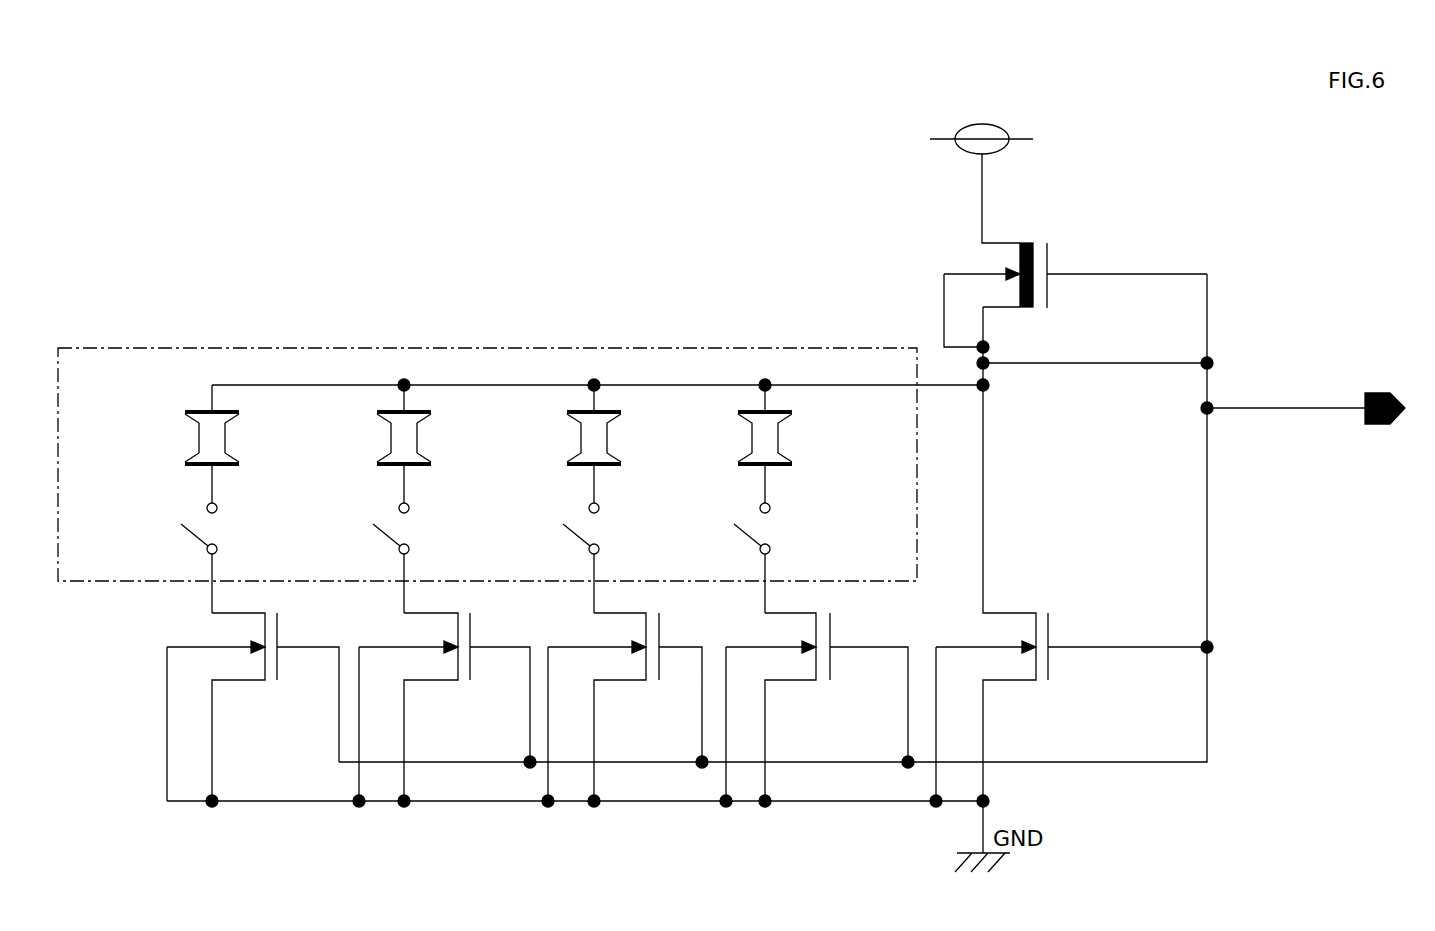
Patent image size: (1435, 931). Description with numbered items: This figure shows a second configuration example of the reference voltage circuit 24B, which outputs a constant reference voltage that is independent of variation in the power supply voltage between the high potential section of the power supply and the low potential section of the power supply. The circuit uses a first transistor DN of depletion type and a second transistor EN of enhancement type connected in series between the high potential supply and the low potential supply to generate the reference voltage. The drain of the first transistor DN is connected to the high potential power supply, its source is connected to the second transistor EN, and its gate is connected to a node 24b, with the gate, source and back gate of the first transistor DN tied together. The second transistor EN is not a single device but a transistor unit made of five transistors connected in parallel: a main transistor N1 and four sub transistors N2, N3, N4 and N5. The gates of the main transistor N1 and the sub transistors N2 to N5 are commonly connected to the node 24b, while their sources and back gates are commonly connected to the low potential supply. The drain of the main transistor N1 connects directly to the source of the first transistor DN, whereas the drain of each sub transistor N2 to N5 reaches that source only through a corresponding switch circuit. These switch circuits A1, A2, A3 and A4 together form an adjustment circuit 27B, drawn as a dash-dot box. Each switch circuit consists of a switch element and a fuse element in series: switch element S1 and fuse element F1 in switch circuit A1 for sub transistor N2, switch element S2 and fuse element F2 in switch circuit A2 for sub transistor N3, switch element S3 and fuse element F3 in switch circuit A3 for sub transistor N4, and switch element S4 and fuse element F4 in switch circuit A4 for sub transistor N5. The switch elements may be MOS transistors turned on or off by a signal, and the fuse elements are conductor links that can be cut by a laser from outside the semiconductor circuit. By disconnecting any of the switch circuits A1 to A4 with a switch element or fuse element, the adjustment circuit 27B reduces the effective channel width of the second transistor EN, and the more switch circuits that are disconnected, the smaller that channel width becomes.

The reference voltage circuit 24B is at (282, 169).
The adjustment circuit 27B is at (485, 347).
The node 24b is at (1212, 404).
The first transistor DN is at (1050, 254).
The second transistor EN is at (1059, 560).
The main transistor N1 is at (1051, 624).
The sub transistor N2 is at (833, 624).
The sub transistor N3 is at (662, 624).
The sub transistor N4 is at (473, 624).
The sub transistor N5 is at (280, 624).
The fuse element F1 is at (752, 436).
The fuse element F2 is at (581, 436).
The fuse element F3 is at (391, 436).
The fuse element F4 is at (199, 437).
The switch element S1 is at (729, 558).
The switch element S2 is at (557, 558).
The switch element S3 is at (367, 558).
The switch element S4 is at (175, 558).
The switch circuit A1 is at (714, 499).
The switch circuit A2 is at (540, 499).
The switch circuit A3 is at (351, 499).
The switch circuit A4 is at (158, 499).